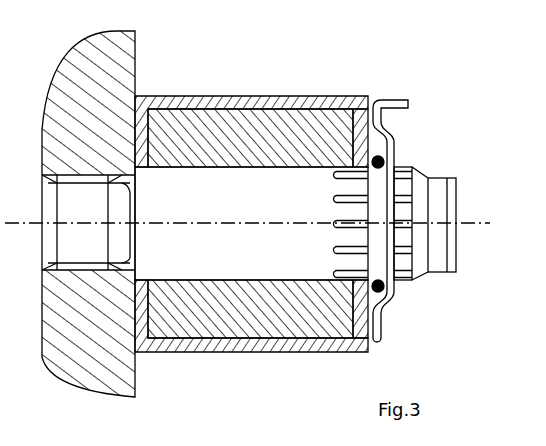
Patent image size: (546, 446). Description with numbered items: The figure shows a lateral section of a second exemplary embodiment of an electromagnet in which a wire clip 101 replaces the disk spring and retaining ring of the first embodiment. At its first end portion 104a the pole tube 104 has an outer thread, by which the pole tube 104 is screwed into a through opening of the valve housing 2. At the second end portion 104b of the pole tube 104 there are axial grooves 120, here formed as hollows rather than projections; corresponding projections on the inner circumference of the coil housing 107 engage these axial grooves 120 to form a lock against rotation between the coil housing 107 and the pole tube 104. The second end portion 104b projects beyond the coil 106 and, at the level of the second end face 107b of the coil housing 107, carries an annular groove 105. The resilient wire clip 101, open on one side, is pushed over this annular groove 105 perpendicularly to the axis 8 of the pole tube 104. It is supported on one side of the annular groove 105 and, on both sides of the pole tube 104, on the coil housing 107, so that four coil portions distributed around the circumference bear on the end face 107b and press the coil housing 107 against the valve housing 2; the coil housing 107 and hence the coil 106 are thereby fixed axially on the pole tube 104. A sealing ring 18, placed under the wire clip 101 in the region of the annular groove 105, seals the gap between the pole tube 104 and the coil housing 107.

The valve housing 2 is at (97, 114).
The axis 8 is at (487, 225).
The sealing ring 18 is at (377, 242).
The wire clip 101 is at (420, 84).
The pole tube 104 is at (267, 210).
The first end portion 104a is at (86, 222).
The second end portion 104b is at (465, 136).
The annular groove 105 is at (405, 275).
The coil 106 is at (267, 143).
The coil housing 107 is at (167, 96).
The second end face 107b is at (370, 104).
The axial grooves 120 is at (347, 253).